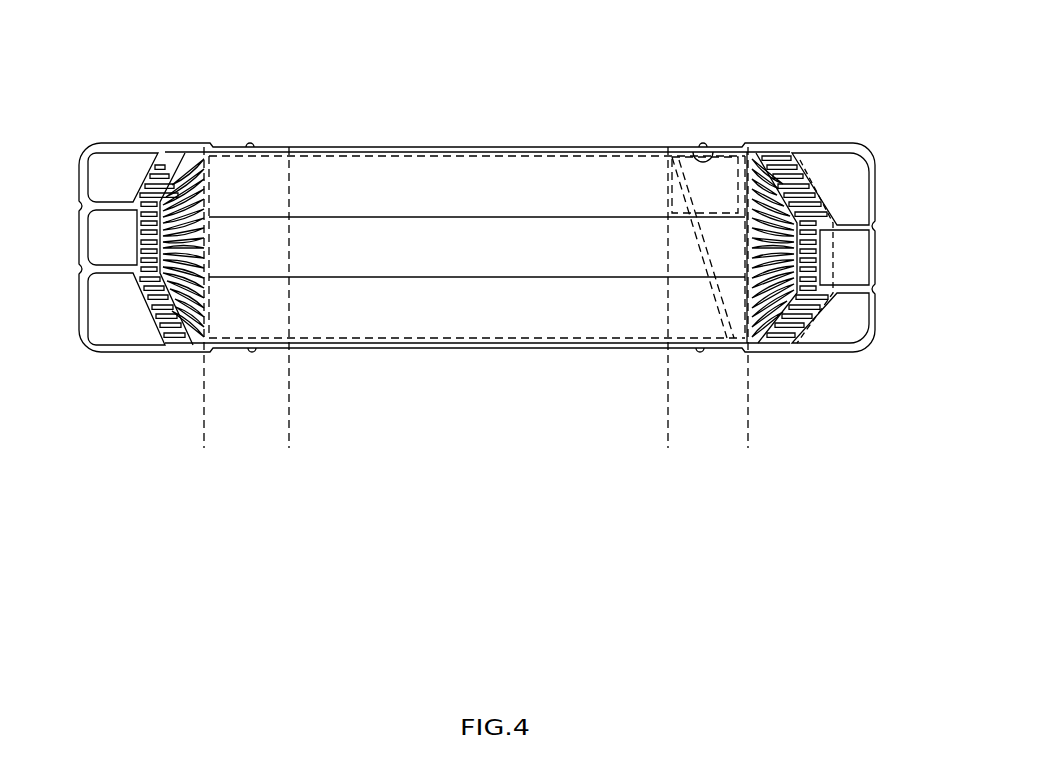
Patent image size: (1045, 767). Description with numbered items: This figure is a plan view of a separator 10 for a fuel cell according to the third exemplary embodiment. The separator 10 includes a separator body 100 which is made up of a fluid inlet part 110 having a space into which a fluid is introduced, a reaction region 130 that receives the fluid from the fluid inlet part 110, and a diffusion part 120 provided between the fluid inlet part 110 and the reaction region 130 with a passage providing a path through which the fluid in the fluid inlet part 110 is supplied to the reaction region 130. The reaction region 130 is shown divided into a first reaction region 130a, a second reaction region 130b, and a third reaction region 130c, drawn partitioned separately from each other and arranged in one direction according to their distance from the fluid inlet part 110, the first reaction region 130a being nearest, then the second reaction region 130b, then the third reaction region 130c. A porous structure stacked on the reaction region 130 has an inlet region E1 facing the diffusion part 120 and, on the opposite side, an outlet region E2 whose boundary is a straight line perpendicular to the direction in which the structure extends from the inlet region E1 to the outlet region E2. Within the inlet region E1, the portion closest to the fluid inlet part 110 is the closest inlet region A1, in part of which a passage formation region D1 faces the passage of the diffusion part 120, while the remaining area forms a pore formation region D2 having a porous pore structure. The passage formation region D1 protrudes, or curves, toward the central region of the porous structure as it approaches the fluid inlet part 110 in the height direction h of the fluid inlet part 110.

The separator 10 is at (628, 63).
The separator body 100 is at (485, 124).
The fluid inlet part 110 is at (858, 182).
The diffusion part 120 is at (837, 252).
The reaction region 130 is at (868, 468).
The first reaction region 130a is at (368, 176).
The second reaction region 130b is at (249, 238).
The third reaction region 130c is at (243, 323).
The closest inlet region A1 is at (715, 163).
The passage formation region D1 is at (718, 300).
The pore formation region D2 is at (712, 285).
The inlet region E1 is at (746, 437).
The outlet region E2 is at (287, 437).
The height direction h is at (52, 150).